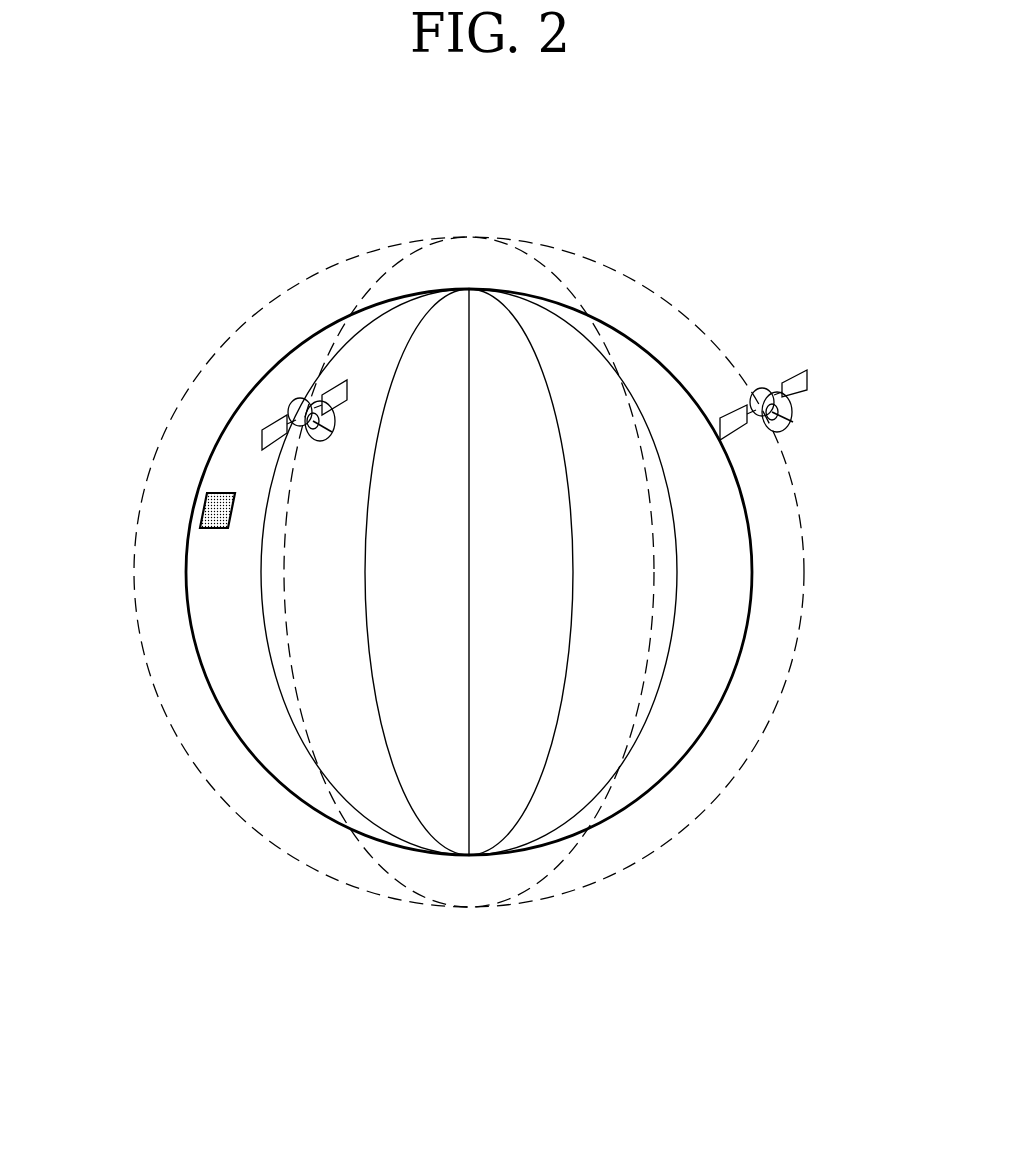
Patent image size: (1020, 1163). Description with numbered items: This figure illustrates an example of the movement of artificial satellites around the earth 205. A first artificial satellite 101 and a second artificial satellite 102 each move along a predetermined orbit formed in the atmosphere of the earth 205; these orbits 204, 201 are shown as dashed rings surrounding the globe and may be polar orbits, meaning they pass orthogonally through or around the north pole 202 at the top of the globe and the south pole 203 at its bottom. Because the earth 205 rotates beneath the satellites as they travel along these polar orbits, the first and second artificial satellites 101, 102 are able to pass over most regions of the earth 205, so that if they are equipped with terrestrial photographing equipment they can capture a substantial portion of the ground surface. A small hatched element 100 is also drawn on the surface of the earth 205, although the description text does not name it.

The ground station 100 is at (200, 510).
The first artificial satellite 101 is at (298, 402).
The second artificial satellite 102 is at (805, 383).
The orbit 201 is at (380, 282).
The north pole 202 is at (470, 288).
The south pole 203 is at (470, 857).
The orbit 204 is at (605, 268).
The earth 205 is at (627, 820).